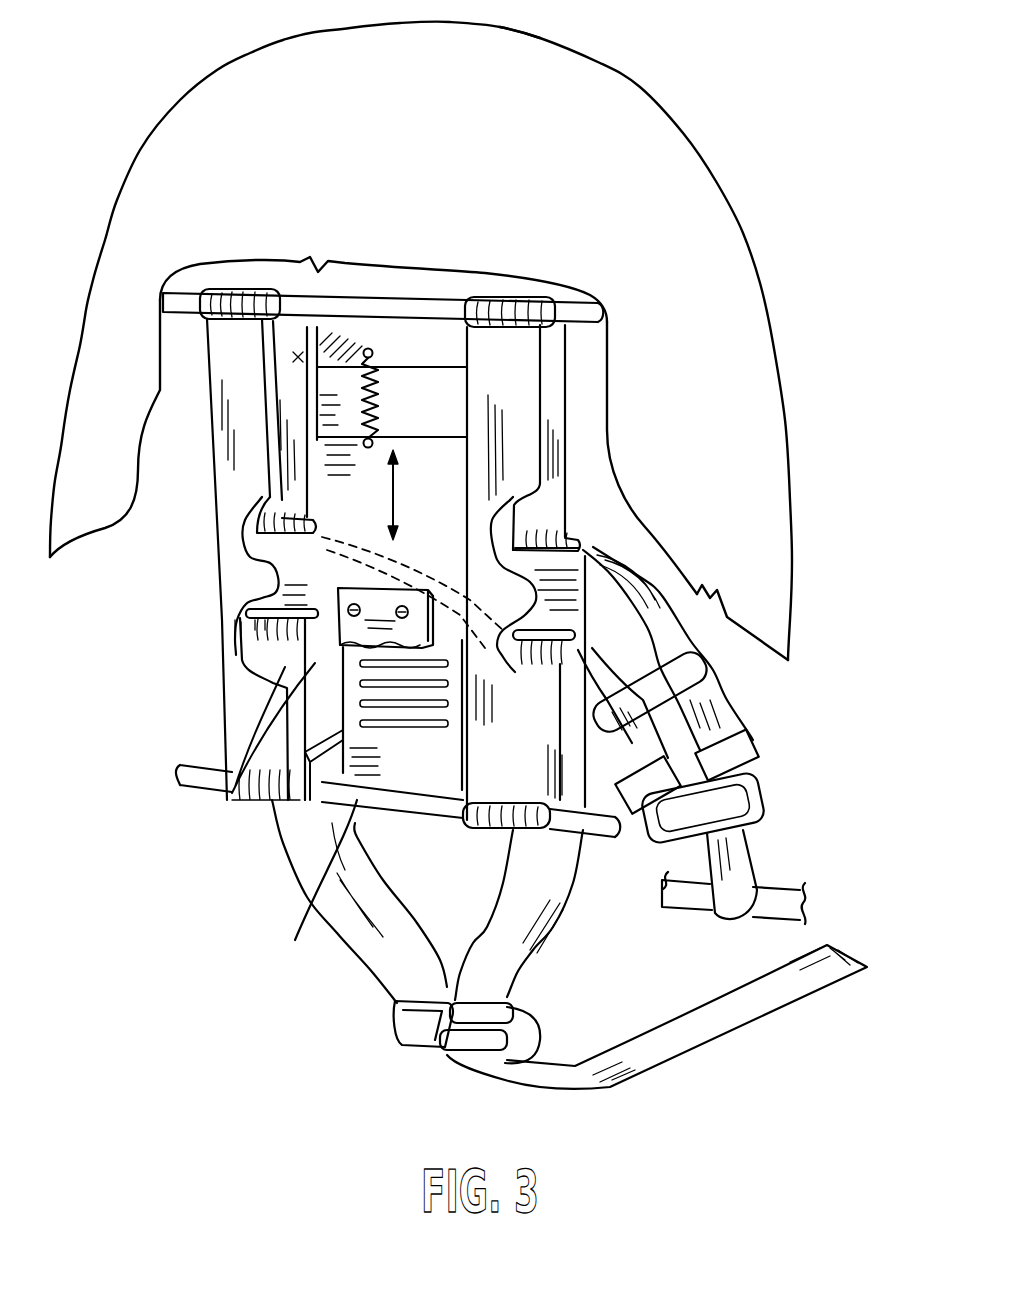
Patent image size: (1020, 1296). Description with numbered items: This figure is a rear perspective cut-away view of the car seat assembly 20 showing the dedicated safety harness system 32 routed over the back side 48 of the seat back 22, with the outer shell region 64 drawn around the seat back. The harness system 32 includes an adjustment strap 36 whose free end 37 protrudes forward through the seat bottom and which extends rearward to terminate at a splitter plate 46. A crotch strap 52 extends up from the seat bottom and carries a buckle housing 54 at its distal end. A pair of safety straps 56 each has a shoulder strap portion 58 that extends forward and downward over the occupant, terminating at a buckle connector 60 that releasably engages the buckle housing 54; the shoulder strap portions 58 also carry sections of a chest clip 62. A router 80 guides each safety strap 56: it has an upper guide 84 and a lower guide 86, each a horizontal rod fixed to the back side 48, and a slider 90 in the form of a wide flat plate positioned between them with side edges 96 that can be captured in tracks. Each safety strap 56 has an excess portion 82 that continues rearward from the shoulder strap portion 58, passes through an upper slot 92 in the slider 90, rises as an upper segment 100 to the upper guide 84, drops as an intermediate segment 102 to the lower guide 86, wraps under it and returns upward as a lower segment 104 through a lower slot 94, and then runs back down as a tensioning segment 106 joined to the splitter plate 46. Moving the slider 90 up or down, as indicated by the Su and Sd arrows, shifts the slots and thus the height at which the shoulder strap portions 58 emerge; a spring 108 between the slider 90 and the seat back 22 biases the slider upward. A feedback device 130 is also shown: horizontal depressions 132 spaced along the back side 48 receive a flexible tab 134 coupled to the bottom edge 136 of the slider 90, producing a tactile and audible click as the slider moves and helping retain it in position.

The seat assembly 20 is at (176, 72).
The seat back 22 is at (722, 285).
The shell edge 64 is at (536, 46).
The safety harness system 32 is at (756, 727).
The adjustment strap 36 is at (637, 1050).
The free end 37 is at (842, 957).
The splitter plate 46 is at (400, 1023).
The back side 48 is at (300, 350).
The crotch strap 52 is at (740, 867).
The buckle housing 54 is at (750, 800).
The safety strap 56 is at (214, 667).
The shoulder strap portion 58 is at (680, 640).
The buckle connector 60 is at (722, 753).
The chest clip 62 is at (708, 653).
The router 80 is at (444, 468).
The excess portion 82 is at (297, 857).
The upper guide 84 is at (399, 300).
The lower guide 86 is at (321, 883).
The slider 90 is at (295, 557).
The upper slot 92 is at (318, 523).
The lower slot 94 is at (318, 610).
The side edge 96 is at (615, 557).
The upper segment 100 is at (280, 337).
The intermediate segment 102 is at (230, 530).
The lower segment 104 is at (280, 680).
The tensioning segment 106 is at (245, 785).
The spring 108 is at (384, 404).
The feedback device 130 is at (295, 817).
The depressions 132 is at (406, 736).
The flexible tab 134 is at (390, 592).
The bottom edge 136 is at (460, 658).